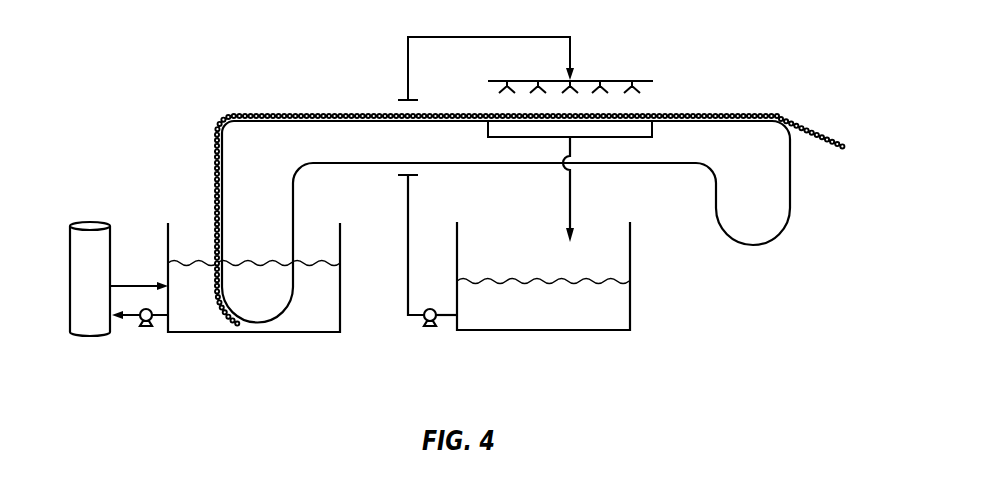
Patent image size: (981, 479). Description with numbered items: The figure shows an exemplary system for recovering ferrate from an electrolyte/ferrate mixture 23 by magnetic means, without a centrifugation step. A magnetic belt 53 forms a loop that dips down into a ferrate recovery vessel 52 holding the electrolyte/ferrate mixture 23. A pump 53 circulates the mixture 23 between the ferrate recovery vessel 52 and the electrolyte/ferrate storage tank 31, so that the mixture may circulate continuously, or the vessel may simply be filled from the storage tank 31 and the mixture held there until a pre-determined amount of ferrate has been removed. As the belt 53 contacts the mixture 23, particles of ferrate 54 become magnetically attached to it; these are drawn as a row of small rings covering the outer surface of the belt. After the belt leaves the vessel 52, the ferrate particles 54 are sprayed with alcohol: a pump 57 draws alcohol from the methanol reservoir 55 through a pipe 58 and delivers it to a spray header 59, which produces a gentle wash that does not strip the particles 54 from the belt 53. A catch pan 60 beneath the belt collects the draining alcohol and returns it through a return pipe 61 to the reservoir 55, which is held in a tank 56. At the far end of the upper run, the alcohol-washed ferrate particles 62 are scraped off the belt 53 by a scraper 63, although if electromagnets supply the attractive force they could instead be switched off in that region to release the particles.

The electrolyte/ferrate mixture 23 is at (138, 282).
The electrolyte/ferrate storage tank 31 is at (90, 335).
The ferrate recovery vessel 52 is at (238, 333).
The magnetic belt 53 is at (146, 327).
The ferrate particles 54 is at (318, 112).
The methanol reservoir 55 is at (545, 318).
The second tank 56 is at (632, 248).
The pump 57 is at (428, 329).
The conduit 58 is at (412, 188).
The spray header 59 is at (607, 75).
The catch pan 60 is at (542, 138).
The return pipe 61 is at (572, 183).
The alcohol-washed ferrate particles 62 is at (742, 114).
The scraper 63 is at (825, 145).